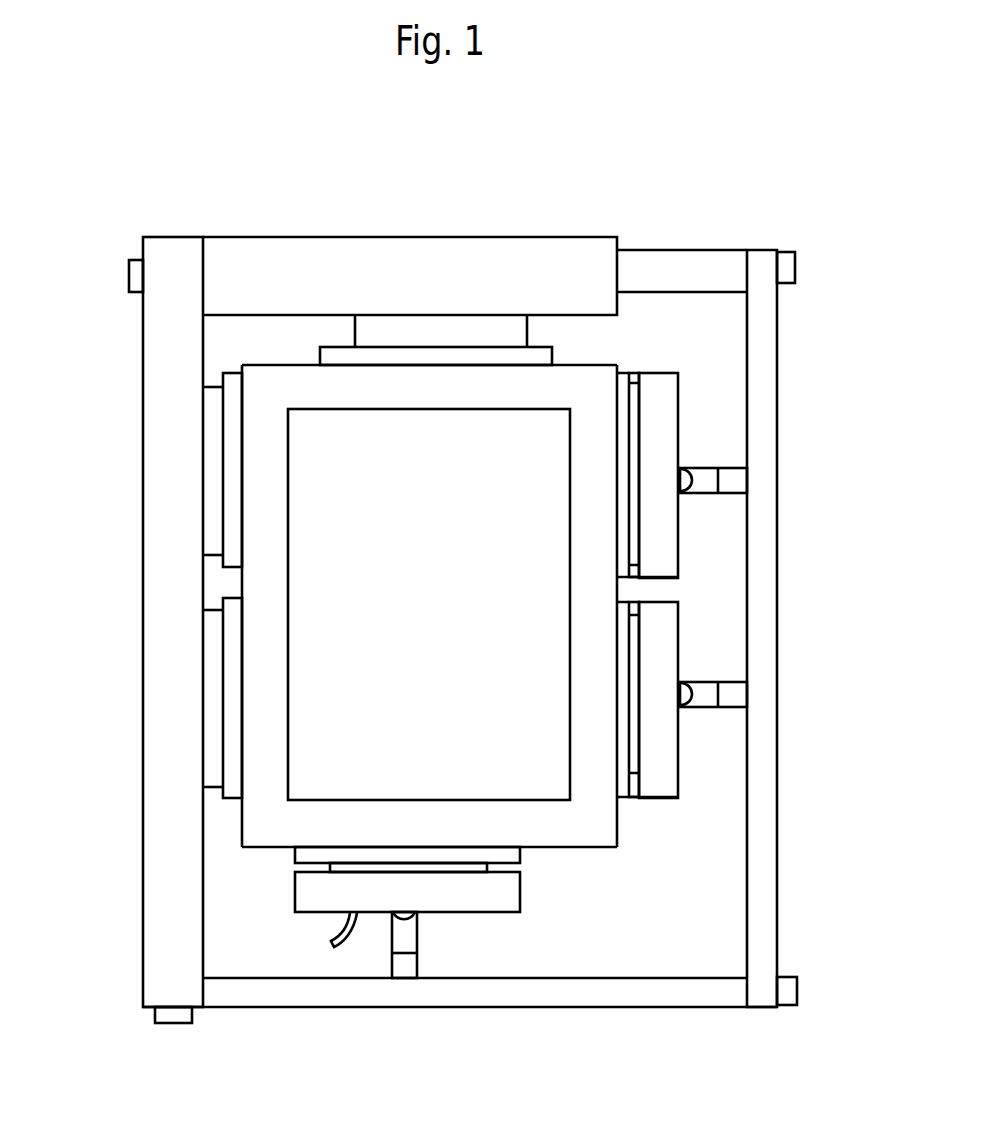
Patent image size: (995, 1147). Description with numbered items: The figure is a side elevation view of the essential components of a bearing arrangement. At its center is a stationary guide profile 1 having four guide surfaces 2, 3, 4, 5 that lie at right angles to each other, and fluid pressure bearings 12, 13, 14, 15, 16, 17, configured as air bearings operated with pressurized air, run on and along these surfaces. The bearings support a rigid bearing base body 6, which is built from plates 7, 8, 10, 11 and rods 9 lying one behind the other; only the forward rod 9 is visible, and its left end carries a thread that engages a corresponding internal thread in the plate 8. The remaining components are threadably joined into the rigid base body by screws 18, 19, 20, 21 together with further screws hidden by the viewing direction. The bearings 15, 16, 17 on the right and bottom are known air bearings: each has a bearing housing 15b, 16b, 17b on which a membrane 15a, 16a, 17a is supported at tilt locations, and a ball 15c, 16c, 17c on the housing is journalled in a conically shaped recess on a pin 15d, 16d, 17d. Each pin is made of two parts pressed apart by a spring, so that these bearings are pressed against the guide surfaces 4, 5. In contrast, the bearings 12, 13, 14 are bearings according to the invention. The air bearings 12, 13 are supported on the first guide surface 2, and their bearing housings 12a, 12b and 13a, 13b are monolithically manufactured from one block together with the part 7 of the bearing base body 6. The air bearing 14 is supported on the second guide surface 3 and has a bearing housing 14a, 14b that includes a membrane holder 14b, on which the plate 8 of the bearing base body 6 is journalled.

The stationary guide profile 1 is at (590, 832).
The guide surface 2 is at (242, 823).
The guide surface 3 is at (582, 363).
The guide surface 4 is at (619, 829).
The guide surface 5 is at (263, 847).
The bearing base body 6 is at (246, 220).
The plate 7 is at (155, 392).
The plate 8 is at (392, 265).
The rod 9 is at (683, 255).
The plate 10 is at (768, 400).
The plate 11 is at (722, 993).
The fluid pressure bearing 12 is at (212, 531).
The bearing housing 12a is at (228, 424).
The bearing housing 12b is at (210, 476).
The fluid pressure bearing 13 is at (216, 716).
The bearing housing 13a is at (235, 627).
The bearing housing 13b is at (212, 665).
The air bearing 14 is at (484, 333).
The bearing housing 14a is at (328, 350).
The membrane holder 14b is at (413, 330).
The fluid pressure bearing 15 is at (665, 542).
The membrane 15a is at (620, 443).
The bearing housing 15b is at (665, 392).
The ball 15c is at (693, 497).
The pin 15d is at (738, 480).
The fluid pressure bearing 16 is at (667, 770).
The membrane 16a is at (668, 650).
The bearing housing 16b is at (693, 682).
The ball 16c is at (715, 697).
The pin 16d is at (690, 705).
The fluid pressure bearing 17 is at (490, 893).
The membrane 17a is at (513, 852).
The bearing housing 17b is at (453, 900).
The ball 17c is at (393, 930).
The pin 17d is at (408, 963).
The screw 18 is at (170, 1012).
The screw 19 is at (133, 258).
The screw 20 is at (785, 263).
The screw 21 is at (790, 985).